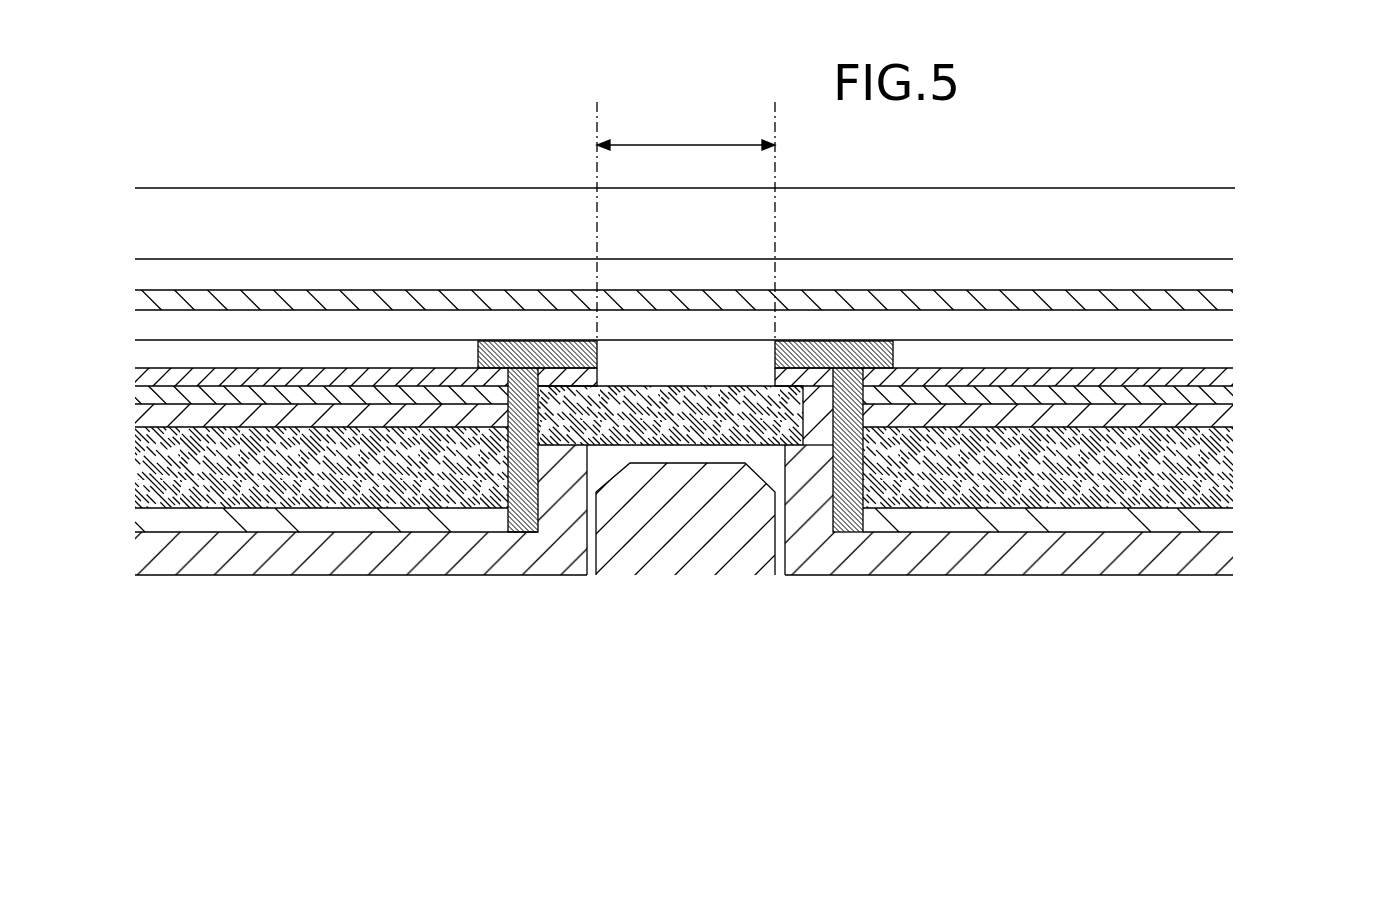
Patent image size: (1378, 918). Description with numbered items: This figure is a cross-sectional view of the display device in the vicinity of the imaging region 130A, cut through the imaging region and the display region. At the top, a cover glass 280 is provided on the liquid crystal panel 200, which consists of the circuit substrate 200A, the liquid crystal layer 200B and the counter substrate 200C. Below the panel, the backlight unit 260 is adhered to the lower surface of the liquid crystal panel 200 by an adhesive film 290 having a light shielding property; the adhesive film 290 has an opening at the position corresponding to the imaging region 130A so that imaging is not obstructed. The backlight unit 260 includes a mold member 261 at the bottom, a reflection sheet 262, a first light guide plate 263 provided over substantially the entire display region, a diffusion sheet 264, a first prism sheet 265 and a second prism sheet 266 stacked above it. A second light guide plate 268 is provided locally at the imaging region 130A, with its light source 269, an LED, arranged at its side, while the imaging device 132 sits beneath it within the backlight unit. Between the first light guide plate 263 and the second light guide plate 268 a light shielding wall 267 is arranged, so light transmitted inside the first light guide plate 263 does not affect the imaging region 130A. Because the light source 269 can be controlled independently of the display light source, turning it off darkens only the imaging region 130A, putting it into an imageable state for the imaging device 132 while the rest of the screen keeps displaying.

The imaging region 130A is at (686, 221).
The cover glass 280 is at (1165, 198).
The liquid crystal panel 200 is at (124, 260).
The circuit substrate 200A is at (1225, 328).
The liquid crystal layer 200B is at (1228, 300).
The counter substrate 200C is at (1228, 272).
The adhesive film 290 is at (893, 350).
The backlight unit 260 is at (124, 365).
The mold member 261 is at (1225, 556).
The reflection sheet 262 is at (1225, 523).
The first light guide plate 263 is at (1218, 468).
The diffusion sheet 264 is at (1228, 416).
The first prism sheet 265 is at (1228, 396).
The second prism sheet 266 is at (1228, 380).
The light shielding wall 267 is at (848, 517).
The second light guide plate 268 is at (642, 430).
The light source 269 is at (818, 438).
The imaging device 132 is at (690, 567).